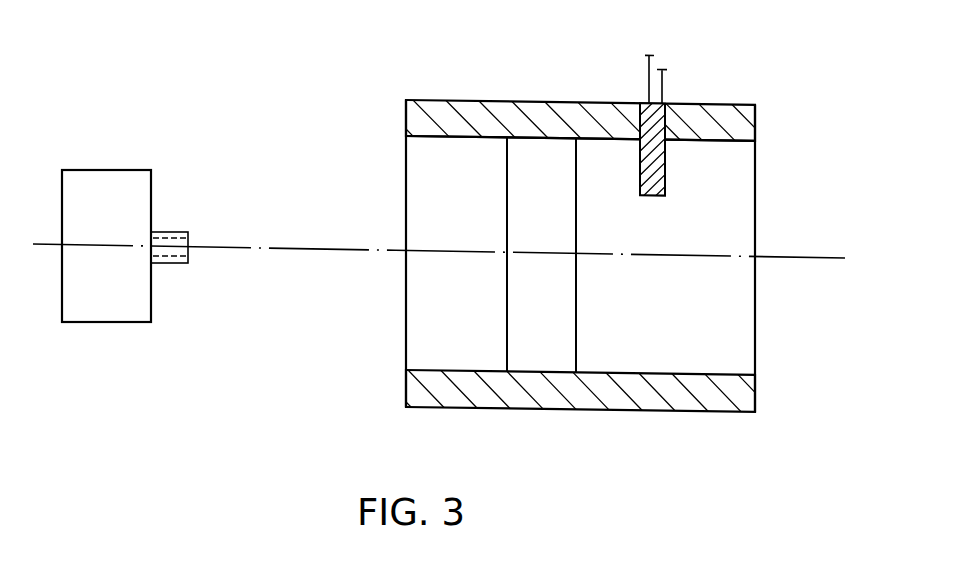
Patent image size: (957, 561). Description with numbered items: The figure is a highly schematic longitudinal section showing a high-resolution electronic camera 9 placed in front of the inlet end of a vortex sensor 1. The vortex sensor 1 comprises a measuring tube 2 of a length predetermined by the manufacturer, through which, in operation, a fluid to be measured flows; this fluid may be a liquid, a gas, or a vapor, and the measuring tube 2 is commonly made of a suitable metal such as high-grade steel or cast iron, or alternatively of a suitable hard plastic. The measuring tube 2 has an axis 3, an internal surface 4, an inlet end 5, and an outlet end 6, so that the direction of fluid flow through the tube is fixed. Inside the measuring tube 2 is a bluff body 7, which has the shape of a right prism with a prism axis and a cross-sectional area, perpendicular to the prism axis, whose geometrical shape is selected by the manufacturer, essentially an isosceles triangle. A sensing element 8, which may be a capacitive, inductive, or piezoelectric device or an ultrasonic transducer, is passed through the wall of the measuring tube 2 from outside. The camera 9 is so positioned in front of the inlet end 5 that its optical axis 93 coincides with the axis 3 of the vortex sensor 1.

The vortex sensor 1 is at (568, 209).
The measuring tube 2 is at (737, 110).
The axis 3 is at (835, 258).
The internal surface 4 is at (730, 136).
The inlet end 5 is at (405, 117).
The outlet end 6 is at (755, 116).
The bluff body 7 is at (548, 146).
The sensing element 8 is at (656, 120).
The high-resolution electronic camera 9 is at (117, 175).
The optical axis 93 is at (45, 243).